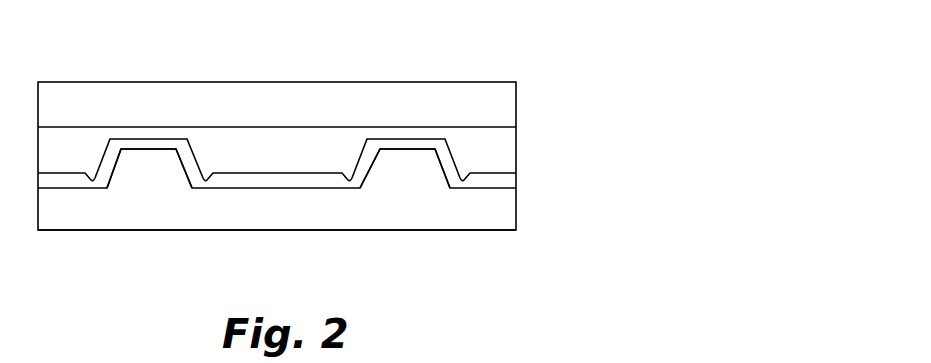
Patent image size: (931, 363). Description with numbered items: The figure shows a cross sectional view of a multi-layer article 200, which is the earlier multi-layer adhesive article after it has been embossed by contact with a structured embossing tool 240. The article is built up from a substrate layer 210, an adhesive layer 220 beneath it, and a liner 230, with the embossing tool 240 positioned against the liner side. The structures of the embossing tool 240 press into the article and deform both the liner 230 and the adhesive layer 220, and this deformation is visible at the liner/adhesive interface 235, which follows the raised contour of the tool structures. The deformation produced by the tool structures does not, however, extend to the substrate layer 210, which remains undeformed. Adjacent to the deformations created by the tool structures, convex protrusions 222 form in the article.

The multi-layer article 200 is at (541, 42).
The substrate layer 210 is at (515, 105).
The adhesive layer 220 is at (515, 143).
The liner 230 is at (515, 181).
The embossing tool 240 is at (515, 212).
The liner/adhesive interface 235 is at (153, 139).
The convex protrusions 222 is at (460, 182).